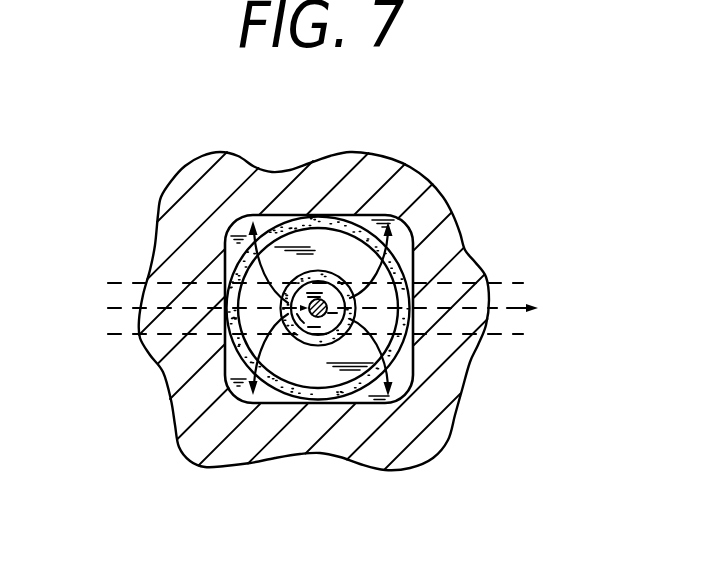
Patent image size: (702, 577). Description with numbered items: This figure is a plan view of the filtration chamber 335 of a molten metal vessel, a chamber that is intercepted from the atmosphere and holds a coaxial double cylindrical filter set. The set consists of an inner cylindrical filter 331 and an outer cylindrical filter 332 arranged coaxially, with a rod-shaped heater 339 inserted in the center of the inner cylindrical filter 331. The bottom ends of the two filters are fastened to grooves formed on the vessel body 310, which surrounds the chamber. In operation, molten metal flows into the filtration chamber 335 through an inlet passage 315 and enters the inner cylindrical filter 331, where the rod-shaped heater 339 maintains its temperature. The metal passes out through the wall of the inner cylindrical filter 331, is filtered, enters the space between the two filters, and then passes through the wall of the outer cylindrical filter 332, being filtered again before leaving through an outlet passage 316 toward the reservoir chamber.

The vessel body 310 is at (388, 172).
The inlet passage 315 is at (118, 281).
The outlet passage 316 is at (515, 282).
The inner cylindrical filter 331 is at (306, 399).
The outer cylindrical filter 332 is at (314, 405).
The filtration chamber 335 is at (396, 398).
The rod-shaped heater 339 is at (318, 299).